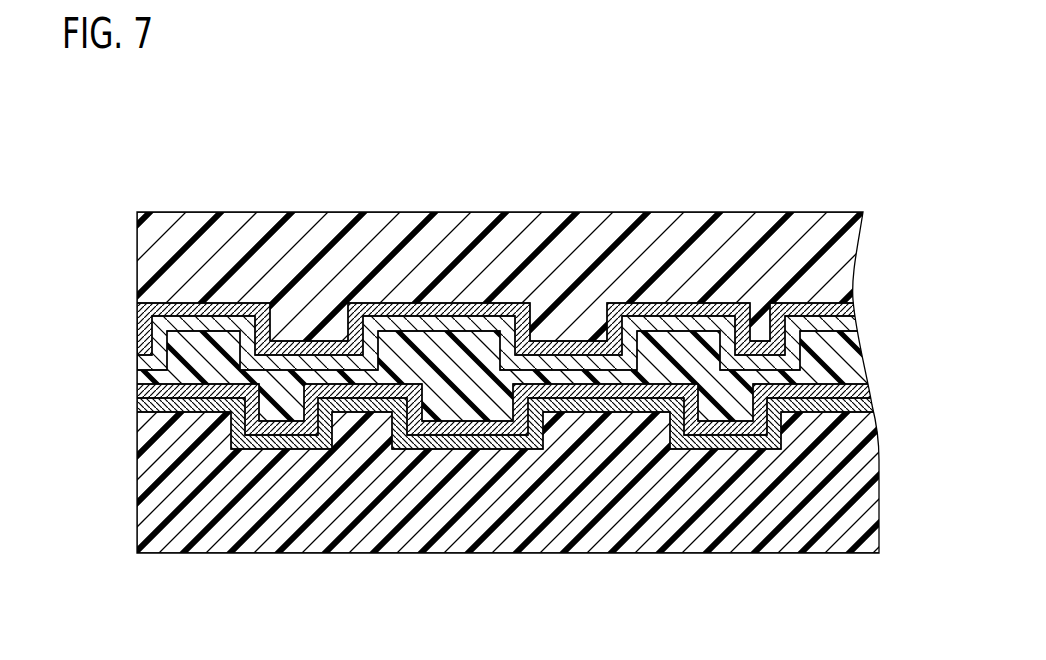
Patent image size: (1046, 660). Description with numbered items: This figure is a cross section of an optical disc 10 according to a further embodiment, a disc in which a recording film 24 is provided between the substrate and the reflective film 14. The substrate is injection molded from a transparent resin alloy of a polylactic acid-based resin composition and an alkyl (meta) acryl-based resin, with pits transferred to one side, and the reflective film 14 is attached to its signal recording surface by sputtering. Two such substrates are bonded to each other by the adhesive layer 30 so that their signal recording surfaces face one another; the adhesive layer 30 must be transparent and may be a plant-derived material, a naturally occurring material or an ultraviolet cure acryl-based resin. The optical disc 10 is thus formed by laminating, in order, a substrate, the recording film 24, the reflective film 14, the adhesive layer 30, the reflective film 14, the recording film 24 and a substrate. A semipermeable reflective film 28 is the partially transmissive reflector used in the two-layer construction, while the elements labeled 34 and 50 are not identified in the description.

The optical disc 10 is at (282, 133).
The reflective film 14 is at (858, 399).
The recording film 24 is at (140, 392).
The semipermeable reflective film 28 is at (833, 327).
The adhesive layer 30 is at (833, 367).
The upper filling layer 34 is at (667, 238).
The substrate 50 is at (702, 527).